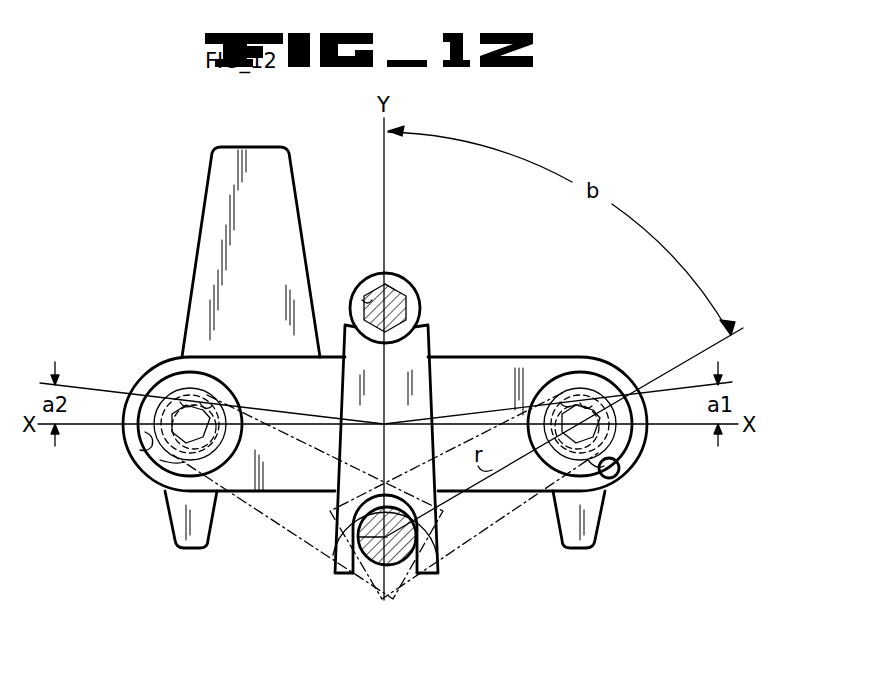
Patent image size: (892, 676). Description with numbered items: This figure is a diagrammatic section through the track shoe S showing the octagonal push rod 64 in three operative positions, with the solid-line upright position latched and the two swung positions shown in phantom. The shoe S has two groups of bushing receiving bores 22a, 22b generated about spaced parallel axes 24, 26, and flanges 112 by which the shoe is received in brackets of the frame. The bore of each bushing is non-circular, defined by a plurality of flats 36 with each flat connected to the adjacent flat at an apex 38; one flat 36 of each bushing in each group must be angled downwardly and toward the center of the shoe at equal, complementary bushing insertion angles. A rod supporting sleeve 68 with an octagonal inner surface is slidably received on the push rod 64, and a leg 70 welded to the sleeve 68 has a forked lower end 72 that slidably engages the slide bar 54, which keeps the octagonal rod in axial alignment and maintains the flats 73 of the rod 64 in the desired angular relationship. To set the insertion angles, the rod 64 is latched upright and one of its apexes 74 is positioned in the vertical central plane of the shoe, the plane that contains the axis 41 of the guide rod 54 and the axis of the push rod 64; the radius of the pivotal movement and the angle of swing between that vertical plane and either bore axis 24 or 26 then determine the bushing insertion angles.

The track shoe S is at (325, 391).
The apex 38 is at (154, 388).
The flats 36 is at (220, 403).
The bushing receiving bores 22a is at (150, 447).
The bushing receiving bores 22b is at (602, 472).
The axis 24 is at (162, 462).
The axis 26 is at (619, 466).
The flanges 112 is at (180, 530).
The leg 70 is at (426, 337).
The rod supporting sleeve 68 is at (412, 297).
The octagonal push rod 64 is at (400, 311).
The flats 73 is at (372, 289).
The apex 74 is at (390, 287).
The slide bar 54 is at (416, 536).
The axis 41 is at (357, 537).
The forked lower end 72 is at (345, 572).